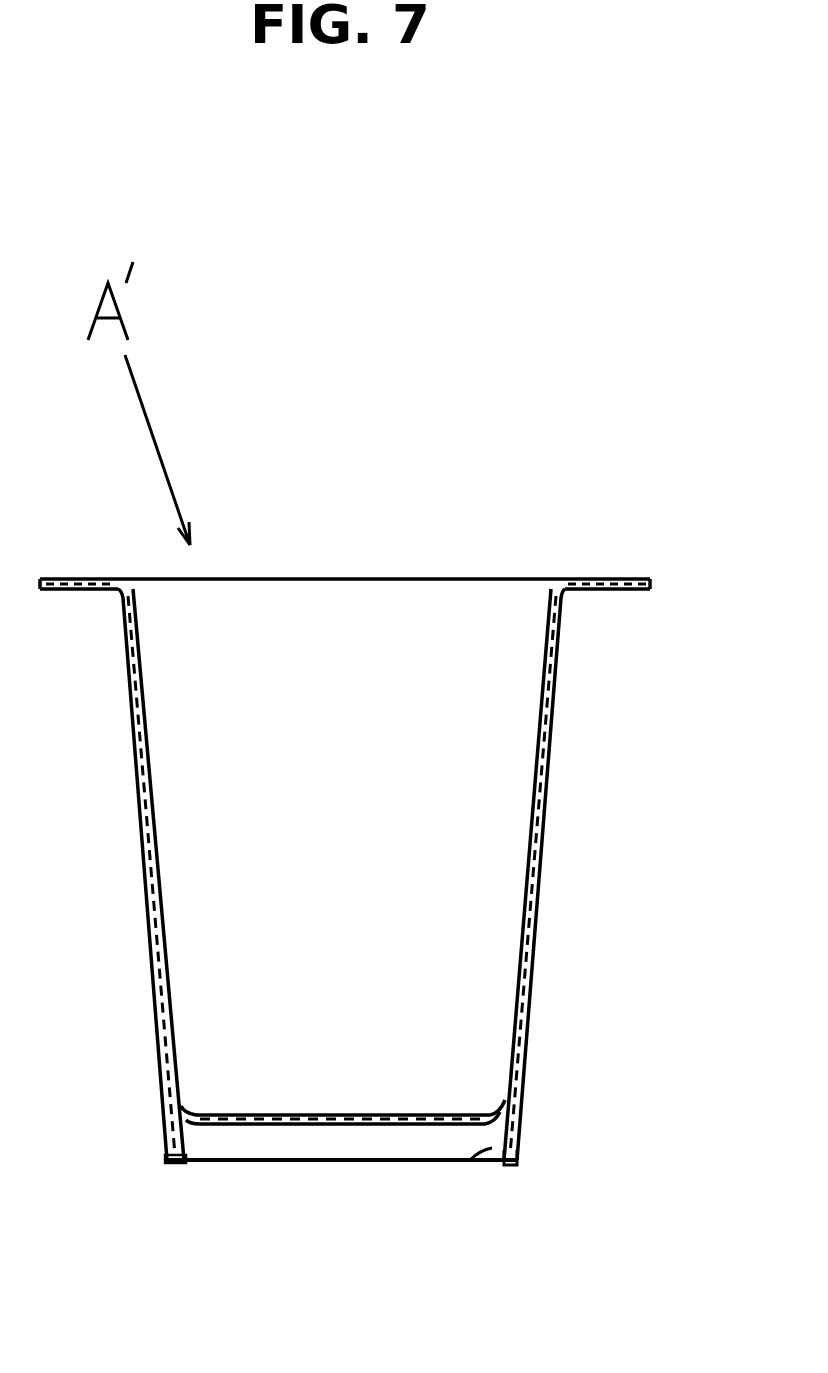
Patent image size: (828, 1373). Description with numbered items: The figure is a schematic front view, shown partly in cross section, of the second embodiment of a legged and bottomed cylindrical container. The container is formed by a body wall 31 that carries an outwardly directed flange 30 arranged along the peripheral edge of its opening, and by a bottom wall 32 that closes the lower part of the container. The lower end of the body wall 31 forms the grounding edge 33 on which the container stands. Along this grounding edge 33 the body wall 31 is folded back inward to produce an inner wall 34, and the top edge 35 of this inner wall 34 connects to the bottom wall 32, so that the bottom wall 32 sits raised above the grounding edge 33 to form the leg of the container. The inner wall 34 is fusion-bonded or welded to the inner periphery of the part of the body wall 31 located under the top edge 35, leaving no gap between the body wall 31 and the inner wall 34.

The flange 30 is at (600, 580).
The body wall 31 is at (548, 785).
The bottom wall 32 is at (391, 1126).
The grounding edge 33 is at (507, 1162).
The inner wall 34 is at (470, 1160).
The top edge 35 is at (517, 1088).